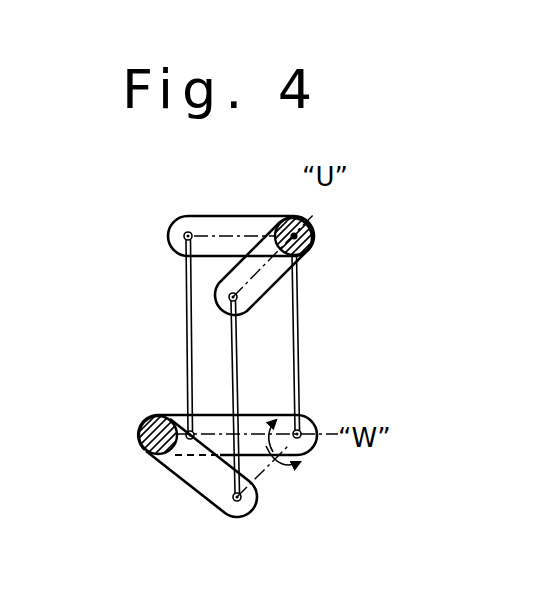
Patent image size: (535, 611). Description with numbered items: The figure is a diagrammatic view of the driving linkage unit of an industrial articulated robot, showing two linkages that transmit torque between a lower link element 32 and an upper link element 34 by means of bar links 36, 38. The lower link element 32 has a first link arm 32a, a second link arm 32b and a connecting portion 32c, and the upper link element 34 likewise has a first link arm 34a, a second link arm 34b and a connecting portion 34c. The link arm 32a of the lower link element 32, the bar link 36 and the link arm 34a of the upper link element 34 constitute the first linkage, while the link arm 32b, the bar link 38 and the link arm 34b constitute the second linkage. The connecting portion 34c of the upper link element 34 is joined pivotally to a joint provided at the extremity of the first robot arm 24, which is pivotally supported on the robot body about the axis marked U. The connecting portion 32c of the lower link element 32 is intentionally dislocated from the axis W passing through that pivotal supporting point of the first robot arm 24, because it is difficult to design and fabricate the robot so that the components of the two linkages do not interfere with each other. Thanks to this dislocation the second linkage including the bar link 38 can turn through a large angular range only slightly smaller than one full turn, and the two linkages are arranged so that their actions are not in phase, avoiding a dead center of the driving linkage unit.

The upper link element 34 is at (185, 216).
The first link arm 34a is at (276, 289).
The second link arm 34b is at (233, 216).
The connecting portion 34c is at (314, 236).
The first robot arm 24 is at (300, 283).
The bar link 38 is at (185, 299).
The bar link 36 is at (238, 381).
The lower link element 32 is at (191, 492).
The first link arm 32a is at (165, 466).
The second link arm 32b is at (266, 450).
The connecting portion 32c is at (143, 429).